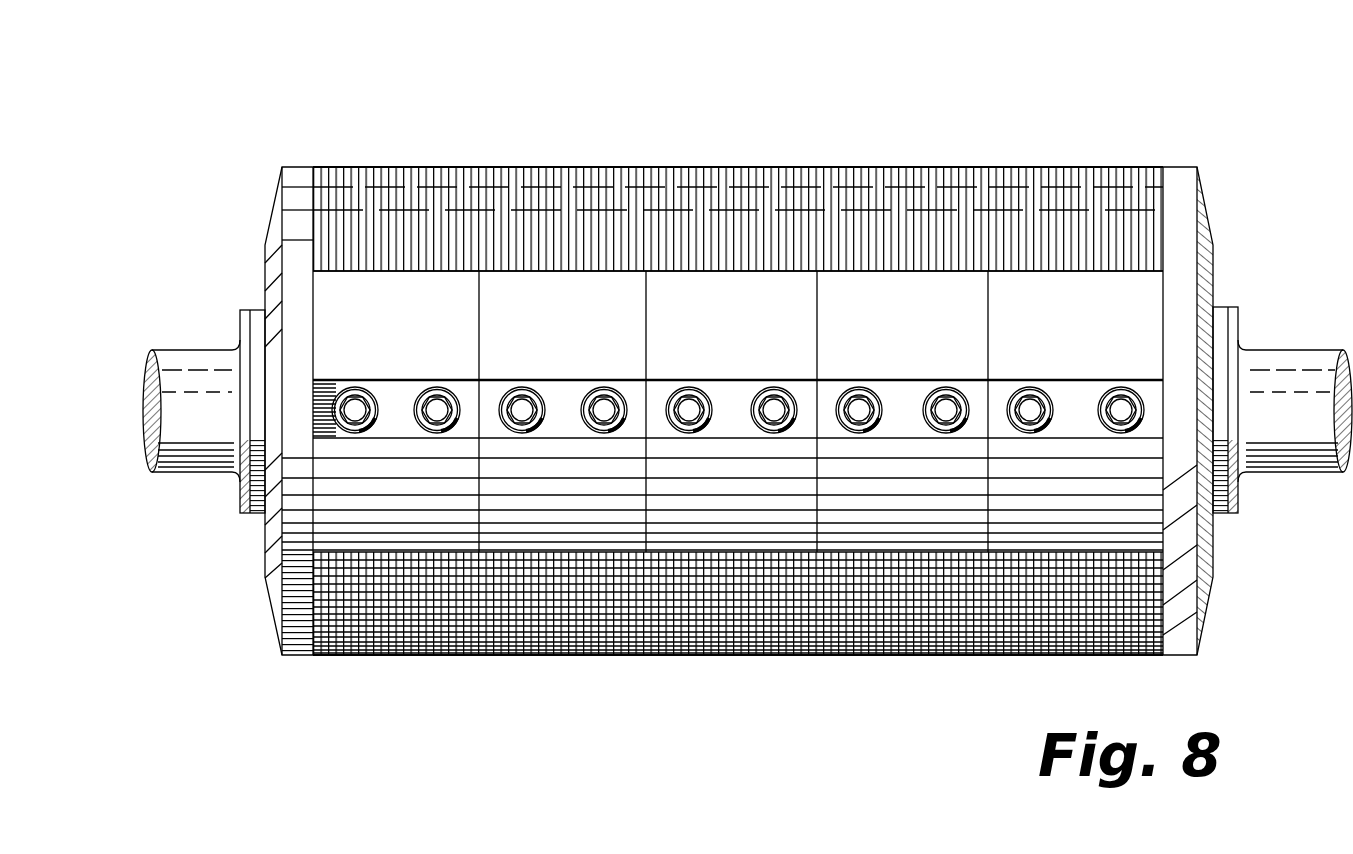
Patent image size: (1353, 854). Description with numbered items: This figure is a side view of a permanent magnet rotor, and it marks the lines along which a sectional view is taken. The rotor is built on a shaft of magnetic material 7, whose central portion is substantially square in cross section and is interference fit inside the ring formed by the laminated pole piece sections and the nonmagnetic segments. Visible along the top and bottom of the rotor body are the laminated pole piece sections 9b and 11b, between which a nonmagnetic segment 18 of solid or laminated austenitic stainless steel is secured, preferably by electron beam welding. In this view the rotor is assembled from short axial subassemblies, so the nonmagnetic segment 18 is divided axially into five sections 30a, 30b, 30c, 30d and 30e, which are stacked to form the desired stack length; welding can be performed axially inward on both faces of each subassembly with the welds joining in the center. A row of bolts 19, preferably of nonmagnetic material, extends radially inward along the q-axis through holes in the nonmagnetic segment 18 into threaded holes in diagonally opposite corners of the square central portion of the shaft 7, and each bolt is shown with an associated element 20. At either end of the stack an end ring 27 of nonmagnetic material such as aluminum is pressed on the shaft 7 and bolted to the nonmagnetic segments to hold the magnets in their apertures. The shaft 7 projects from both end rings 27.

The shaft of magnetic material 7 is at (193, 473).
The end ring 27 is at (272, 250).
The north pole piece section 9b is at (693, 195).
The pole piece section 11b is at (846, 625).
The nonmagnetic segment 18 is at (403, 312).
The bolts 19 is at (430, 400).
The bolt washer 20 is at (603, 432).
The section of nonmagnetic segment 30a is at (400, 159).
The section of nonmagnetic segment 30b is at (604, 159).
The section of nonmagnetic segment 30c is at (770, 159).
The section of nonmagnetic segment 30d is at (942, 159).
The section of nonmagnetic segment 30e is at (1098, 159).